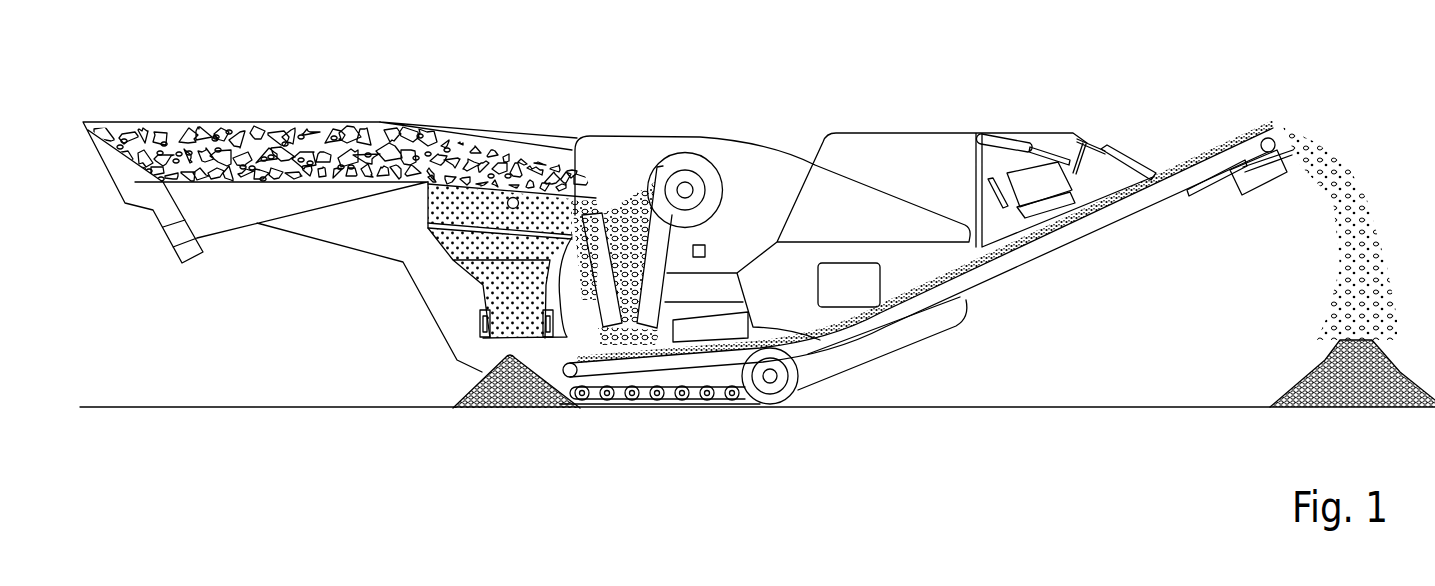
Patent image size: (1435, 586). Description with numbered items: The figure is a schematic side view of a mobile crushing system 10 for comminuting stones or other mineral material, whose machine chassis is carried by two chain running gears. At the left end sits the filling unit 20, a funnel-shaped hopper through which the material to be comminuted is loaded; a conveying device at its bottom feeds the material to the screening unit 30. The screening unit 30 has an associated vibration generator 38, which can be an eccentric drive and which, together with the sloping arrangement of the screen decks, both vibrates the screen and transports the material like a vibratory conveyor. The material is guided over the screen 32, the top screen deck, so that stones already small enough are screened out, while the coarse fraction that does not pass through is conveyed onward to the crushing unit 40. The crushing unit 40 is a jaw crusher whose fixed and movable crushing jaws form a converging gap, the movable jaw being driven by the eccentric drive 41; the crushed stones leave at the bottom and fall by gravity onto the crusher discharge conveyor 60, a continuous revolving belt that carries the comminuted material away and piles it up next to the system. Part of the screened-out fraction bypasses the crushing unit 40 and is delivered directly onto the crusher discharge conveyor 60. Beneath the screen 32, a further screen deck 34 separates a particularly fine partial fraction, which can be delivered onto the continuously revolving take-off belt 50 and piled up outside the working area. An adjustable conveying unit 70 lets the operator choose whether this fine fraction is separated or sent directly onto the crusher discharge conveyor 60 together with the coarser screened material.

The mobile crushing system 10 is at (767, 160).
The filling unit 20 is at (157, 127).
The screening unit 30 is at (523, 153).
The screen 32 is at (533, 187).
The screen deck 34 is at (452, 223).
The vibration generator 38 is at (507, 202).
The crushing unit 40 is at (645, 140).
The eccentric drive 41 is at (683, 160).
The take-off belt 50 is at (483, 338).
The crusher discharge conveyor 60 is at (722, 365).
The adjustable conveying unit 70 is at (555, 227).